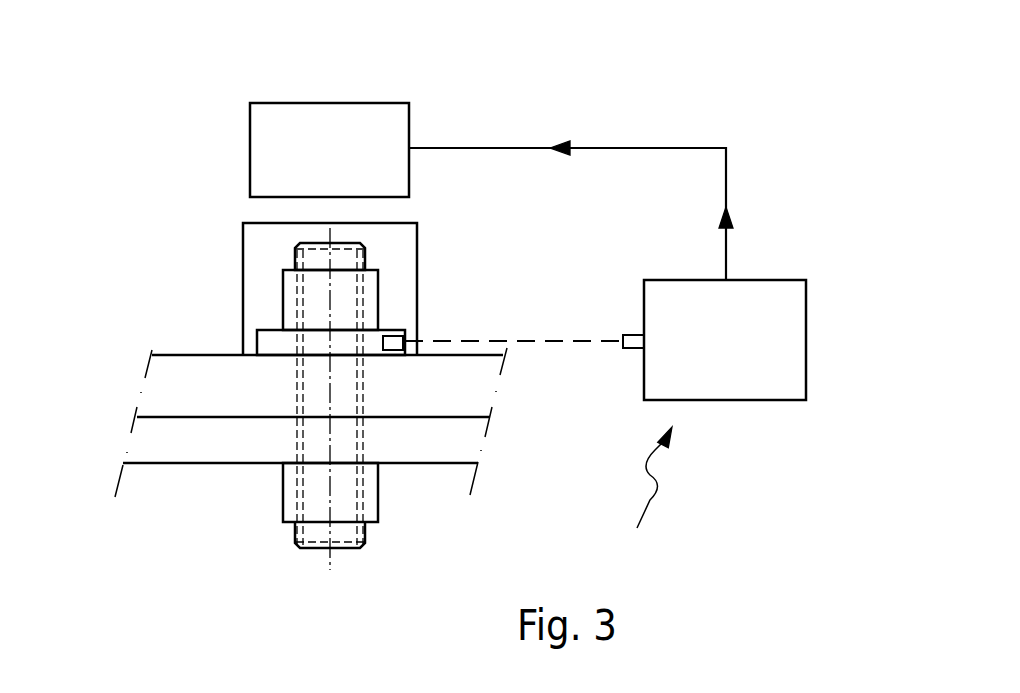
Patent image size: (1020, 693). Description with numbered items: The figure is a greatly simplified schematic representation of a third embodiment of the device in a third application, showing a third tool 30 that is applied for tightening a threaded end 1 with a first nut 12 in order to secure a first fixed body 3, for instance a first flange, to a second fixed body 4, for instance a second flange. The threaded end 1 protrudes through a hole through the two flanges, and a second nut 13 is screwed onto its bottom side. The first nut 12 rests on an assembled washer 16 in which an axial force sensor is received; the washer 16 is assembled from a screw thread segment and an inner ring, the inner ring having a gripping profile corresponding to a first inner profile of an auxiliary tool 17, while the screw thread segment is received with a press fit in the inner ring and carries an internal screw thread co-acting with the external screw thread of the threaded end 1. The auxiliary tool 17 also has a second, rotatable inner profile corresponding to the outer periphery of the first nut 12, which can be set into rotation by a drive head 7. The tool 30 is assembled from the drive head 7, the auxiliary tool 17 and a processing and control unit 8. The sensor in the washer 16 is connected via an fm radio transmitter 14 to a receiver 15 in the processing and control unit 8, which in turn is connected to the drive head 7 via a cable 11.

The threaded end 1 is at (237, 434).
The first fixed body 3 is at (178, 390).
The second fixed body 4 is at (160, 445).
The drive head 7 is at (270, 143).
The processing and control unit 8 is at (778, 340).
The cable 11 is at (651, 148).
The first nut 12 is at (290, 297).
The second nut 13 is at (290, 497).
The fm radio transmitter 14 is at (393, 341).
The receiver 15 is at (630, 338).
The assembled washer 16 is at (270, 345).
The auxiliary tool 17 is at (270, 237).
The third tool 30 is at (644, 493).